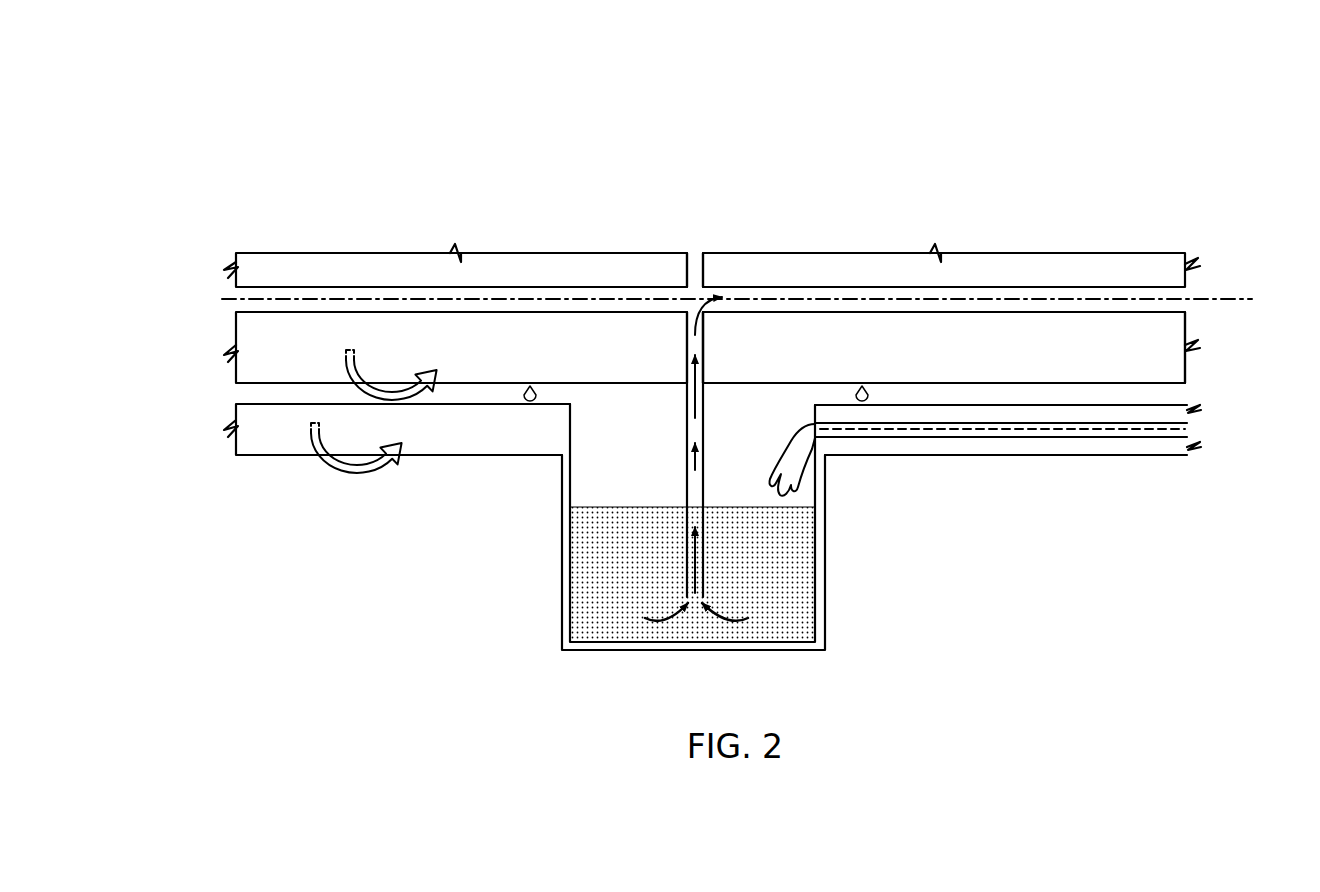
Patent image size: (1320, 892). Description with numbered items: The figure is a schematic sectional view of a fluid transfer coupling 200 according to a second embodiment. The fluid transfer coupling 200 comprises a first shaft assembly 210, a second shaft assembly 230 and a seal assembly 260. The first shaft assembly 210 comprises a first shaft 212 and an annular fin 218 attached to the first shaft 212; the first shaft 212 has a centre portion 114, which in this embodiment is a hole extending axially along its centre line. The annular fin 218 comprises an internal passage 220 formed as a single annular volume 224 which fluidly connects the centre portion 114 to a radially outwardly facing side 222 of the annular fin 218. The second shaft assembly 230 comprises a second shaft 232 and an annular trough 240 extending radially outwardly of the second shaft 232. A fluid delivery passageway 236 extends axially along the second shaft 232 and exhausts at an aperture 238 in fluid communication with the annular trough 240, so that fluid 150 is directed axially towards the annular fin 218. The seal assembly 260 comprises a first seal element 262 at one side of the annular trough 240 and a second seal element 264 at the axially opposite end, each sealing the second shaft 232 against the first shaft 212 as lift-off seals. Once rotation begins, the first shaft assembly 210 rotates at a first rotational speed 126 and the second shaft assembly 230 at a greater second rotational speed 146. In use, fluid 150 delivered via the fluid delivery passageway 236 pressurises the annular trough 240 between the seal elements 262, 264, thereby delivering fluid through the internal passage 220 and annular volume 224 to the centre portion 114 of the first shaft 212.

The fluid transfer coupling 200 is at (1193, 162).
The centre portion 114 is at (1190, 299).
The first shaft assembly 210 is at (212, 365).
The first shaft 212 is at (1177, 374).
The first rotational speed 126 is at (440, 368).
The second rotational speed 146 is at (357, 474).
The seal assembly 260 is at (856, 394).
The first seal element 262 is at (528, 402).
The second seal element 264 is at (864, 400).
The conduit outlet 224 is at (686, 435).
The conduit 220 is at (697, 515).
The annular fin 218 is at (705, 565).
The radially outwardly facing side 222 is at (690, 605).
The annular trough 240 is at (562, 620).
The fluid 150 is at (777, 625).
The second shaft assembly 230 is at (1035, 492).
The second shaft 232 is at (1158, 456).
The fluid delivery passageway 236 is at (1103, 438).
The aperture 238 is at (793, 440).